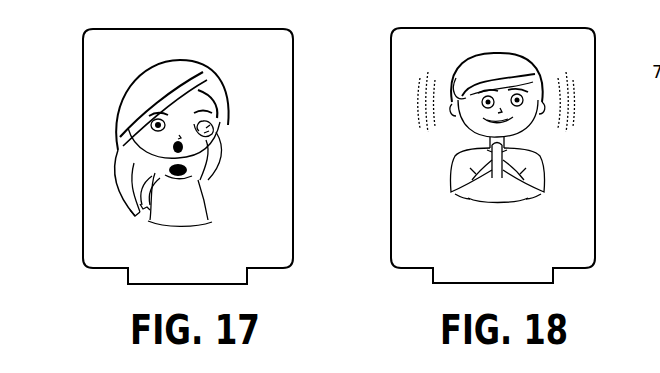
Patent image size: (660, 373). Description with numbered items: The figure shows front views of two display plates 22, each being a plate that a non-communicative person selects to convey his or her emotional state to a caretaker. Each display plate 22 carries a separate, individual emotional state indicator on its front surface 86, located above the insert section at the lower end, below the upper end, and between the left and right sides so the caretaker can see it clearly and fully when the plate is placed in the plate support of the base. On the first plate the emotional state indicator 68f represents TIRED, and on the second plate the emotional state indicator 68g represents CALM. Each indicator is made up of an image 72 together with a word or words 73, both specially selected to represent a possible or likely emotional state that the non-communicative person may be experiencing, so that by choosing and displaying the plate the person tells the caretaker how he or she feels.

In FIG. 17, the display plate 22 is at (296, 83).
In FIG. 18, the display plate 22 is at (598, 64).
In FIG. 17, the image 72 is at (175, 107).
In FIG. 18, the image 72 is at (482, 148).
In FIG. 17, the emotional state indicator 68f is at (239, 159).
In FIG. 18, the emotional state indicator 68g is at (554, 153).
In FIG. 17, the word or words 73 is at (224, 240).
In FIG. 18, the word or words 73 is at (543, 222).
In FIG. 17, the front surface 86 is at (113, 231).
In FIG. 18, the front surface 86 is at (417, 234).